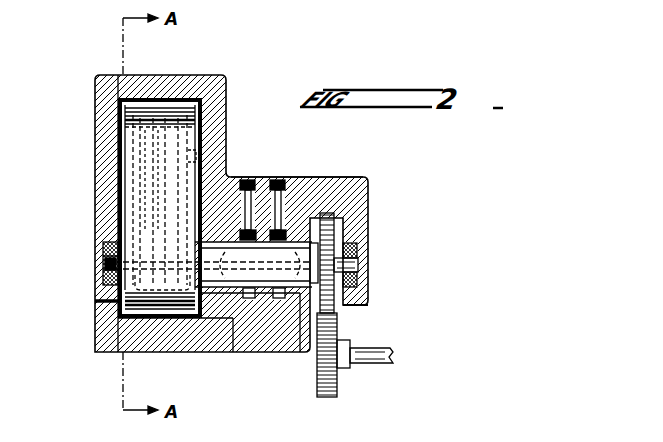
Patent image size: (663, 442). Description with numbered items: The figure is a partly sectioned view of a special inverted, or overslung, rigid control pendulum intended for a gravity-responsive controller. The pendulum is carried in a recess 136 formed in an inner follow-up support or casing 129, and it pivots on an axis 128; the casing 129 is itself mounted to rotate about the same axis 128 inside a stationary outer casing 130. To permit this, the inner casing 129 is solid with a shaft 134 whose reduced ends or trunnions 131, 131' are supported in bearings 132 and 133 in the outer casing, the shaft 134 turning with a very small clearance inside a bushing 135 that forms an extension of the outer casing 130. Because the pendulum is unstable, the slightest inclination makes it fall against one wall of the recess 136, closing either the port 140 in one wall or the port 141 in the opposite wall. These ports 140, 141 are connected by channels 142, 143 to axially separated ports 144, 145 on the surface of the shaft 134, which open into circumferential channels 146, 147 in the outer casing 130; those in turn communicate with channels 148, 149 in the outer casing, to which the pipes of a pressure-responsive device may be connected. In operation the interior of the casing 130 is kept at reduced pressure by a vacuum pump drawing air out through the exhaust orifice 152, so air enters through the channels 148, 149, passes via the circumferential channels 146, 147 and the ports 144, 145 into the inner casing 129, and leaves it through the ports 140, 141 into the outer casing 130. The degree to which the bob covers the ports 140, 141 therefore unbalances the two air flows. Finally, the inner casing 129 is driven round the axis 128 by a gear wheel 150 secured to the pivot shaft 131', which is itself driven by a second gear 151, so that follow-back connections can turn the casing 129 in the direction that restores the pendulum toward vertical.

The axis 128 is at (128, 228).
The follow-up support or casing 129 is at (120, 320).
The stationary outer casing 130 is at (170, 350).
The trunnion 131 is at (83, 263).
The trunnion 131' is at (383, 246).
The bearing 132 is at (108, 248).
The bearing 133 is at (369, 265).
The shaft 134 is at (303, 352).
The bushing 135 is at (368, 200).
The recess 136 is at (170, 118).
The port 140 is at (125, 140).
The port 141 is at (201, 134).
The channel 142 is at (128, 170).
The channel 143 is at (195, 157).
The port 144 is at (290, 353).
The port 145 is at (233, 353).
The circumferential channel 146 is at (332, 179).
The circumferential channel 147 is at (272, 185).
The channel 148 is at (282, 222).
The channel 149 is at (244, 185).
The gear wheel 150 is at (348, 305).
The second gear 151 is at (340, 385).
The exhaust orifice 152 is at (105, 301).